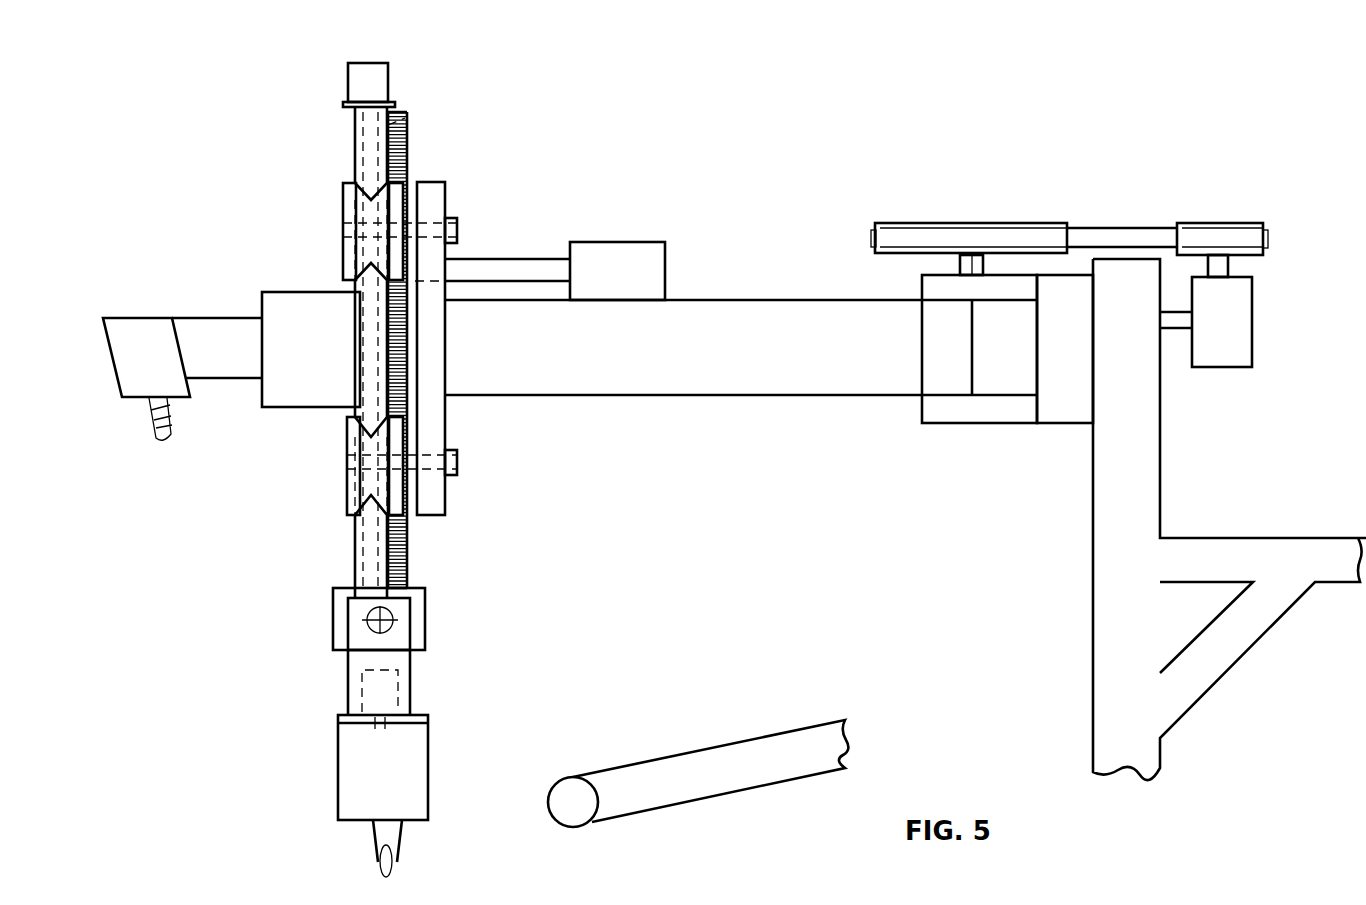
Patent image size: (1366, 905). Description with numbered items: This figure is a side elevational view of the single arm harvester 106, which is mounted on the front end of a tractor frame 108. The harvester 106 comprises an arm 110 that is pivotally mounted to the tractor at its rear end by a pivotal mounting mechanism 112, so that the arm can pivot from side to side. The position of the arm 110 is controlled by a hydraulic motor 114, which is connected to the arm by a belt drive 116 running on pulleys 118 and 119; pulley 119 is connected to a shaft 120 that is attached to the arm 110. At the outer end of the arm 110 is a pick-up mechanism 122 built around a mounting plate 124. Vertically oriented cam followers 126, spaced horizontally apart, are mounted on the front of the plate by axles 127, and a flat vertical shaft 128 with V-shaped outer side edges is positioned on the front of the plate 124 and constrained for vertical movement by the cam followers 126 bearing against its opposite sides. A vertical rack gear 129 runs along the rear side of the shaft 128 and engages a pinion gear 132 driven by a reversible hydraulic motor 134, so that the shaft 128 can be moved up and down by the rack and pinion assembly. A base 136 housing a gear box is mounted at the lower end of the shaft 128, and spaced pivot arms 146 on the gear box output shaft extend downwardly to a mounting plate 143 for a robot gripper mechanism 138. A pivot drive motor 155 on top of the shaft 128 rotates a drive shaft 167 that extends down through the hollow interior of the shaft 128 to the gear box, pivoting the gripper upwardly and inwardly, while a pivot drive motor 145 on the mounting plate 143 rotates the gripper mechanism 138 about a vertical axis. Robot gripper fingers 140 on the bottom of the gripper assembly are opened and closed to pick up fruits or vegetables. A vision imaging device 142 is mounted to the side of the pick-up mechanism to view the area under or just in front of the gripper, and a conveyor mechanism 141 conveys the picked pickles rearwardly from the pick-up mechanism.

The single arm harvester 106 is at (712, 601).
The tractor frame 108 is at (1147, 513).
The arm 110 is at (662, 395).
The pivotal mounting mechanism 112 is at (970, 415).
The hydraulic motor 114 is at (1238, 333).
The belt drive 116 is at (1127, 238).
The pulley 118 is at (1258, 223).
The pulley 119 is at (1012, 222).
The shaft 120 is at (960, 262).
The pick-up mechanism 122 is at (250, 538).
The mounting plate 124 is at (445, 202).
The cam followers 126 is at (343, 203).
The axles 127 is at (457, 228).
The flat vertical shaft 128 is at (355, 153).
The rack gear 129 is at (408, 148).
The pinion gear 132 is at (407, 260).
The hydraulic motor 134 is at (622, 250).
The base 136 is at (414, 587).
The robot gripper mechanism 138 is at (422, 608).
The robot gripper fingers 140 is at (413, 845).
The conveyor mechanism 141 is at (717, 797).
The vision imaging device 142 is at (132, 387).
The mounting plate 143 is at (415, 720).
The pivot drive motor 145 is at (362, 690).
The pivot arms 146 is at (425, 686).
The pivot drive motor 155 is at (385, 78).
The drive shaft 167 is at (405, 120).